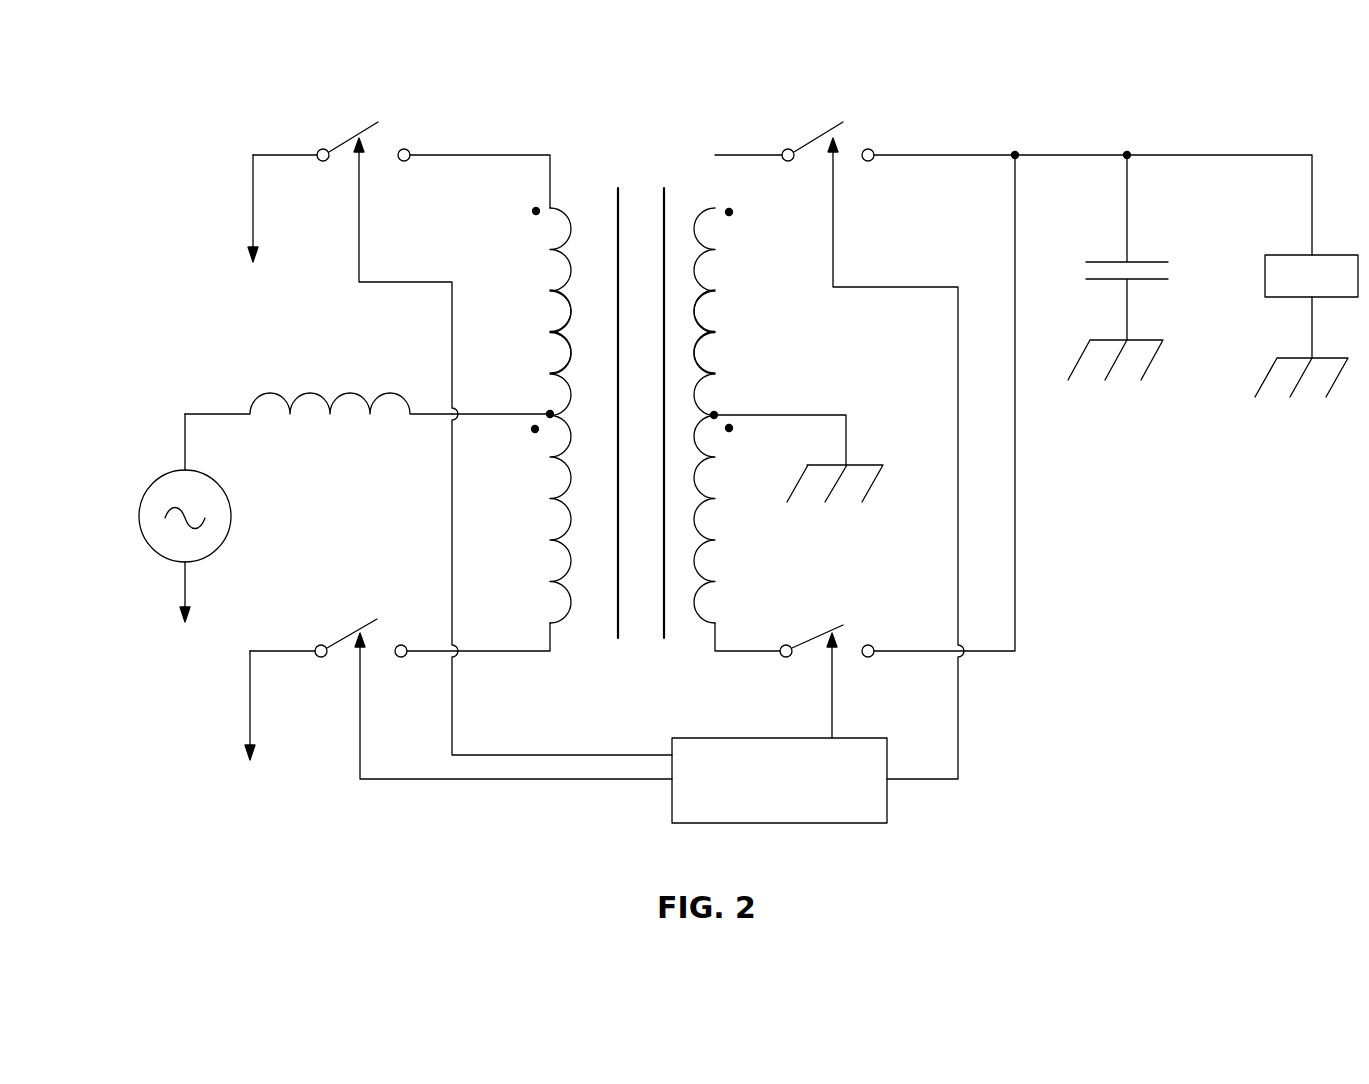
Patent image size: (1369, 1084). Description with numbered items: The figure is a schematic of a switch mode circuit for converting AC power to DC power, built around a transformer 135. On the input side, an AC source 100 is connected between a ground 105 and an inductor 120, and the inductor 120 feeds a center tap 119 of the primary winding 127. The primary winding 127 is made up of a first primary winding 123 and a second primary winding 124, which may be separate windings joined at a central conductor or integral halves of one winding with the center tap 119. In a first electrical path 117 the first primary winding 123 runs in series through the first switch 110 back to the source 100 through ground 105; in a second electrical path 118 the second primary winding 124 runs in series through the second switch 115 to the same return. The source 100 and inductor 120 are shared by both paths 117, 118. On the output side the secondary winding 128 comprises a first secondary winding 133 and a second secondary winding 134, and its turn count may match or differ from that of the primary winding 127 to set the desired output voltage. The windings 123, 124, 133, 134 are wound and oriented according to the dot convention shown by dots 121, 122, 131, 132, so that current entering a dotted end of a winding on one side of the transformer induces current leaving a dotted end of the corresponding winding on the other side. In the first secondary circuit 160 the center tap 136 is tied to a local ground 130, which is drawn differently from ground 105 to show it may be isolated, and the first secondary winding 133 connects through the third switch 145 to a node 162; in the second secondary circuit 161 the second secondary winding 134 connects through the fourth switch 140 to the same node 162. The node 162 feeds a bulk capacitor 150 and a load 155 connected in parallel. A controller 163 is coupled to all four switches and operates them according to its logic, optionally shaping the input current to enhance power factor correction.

The AC source 100 is at (138, 512).
The ground 105 is at (253, 230).
The first switch S1 110 is at (346, 142).
The second switch S2 115 is at (322, 643).
The first electrical path 117 is at (336, 318).
The second electrical path 118 is at (352, 537).
The center tap 119 is at (548, 411).
The inductor 120 is at (332, 415).
The dot 121 is at (532, 434).
The dot 122 is at (536, 210).
The first primary winding 123 is at (549, 332).
The second primary winding 124 is at (548, 539).
The primary winding 127 is at (562, 640).
The secondary winding 128 is at (698, 640).
The local ground 130 is at (868, 465).
The dot 131 is at (730, 432).
The dot 132 is at (730, 210).
The first secondary winding 133 is at (717, 332).
The second secondary winding 134 is at (717, 538).
The transformer 135 is at (618, 180).
The center tap 136 is at (716, 414).
The fourth switch S4 140 is at (812, 642).
The third switch S3 145 is at (812, 142).
The bulk capacitor 150 is at (1115, 262).
The load 155 is at (1293, 257).
The first secondary circuit 160 is at (913, 253).
The second secondary circuit 161 is at (884, 567).
The node 162 is at (1015, 155).
The controller 163 is at (780, 825).